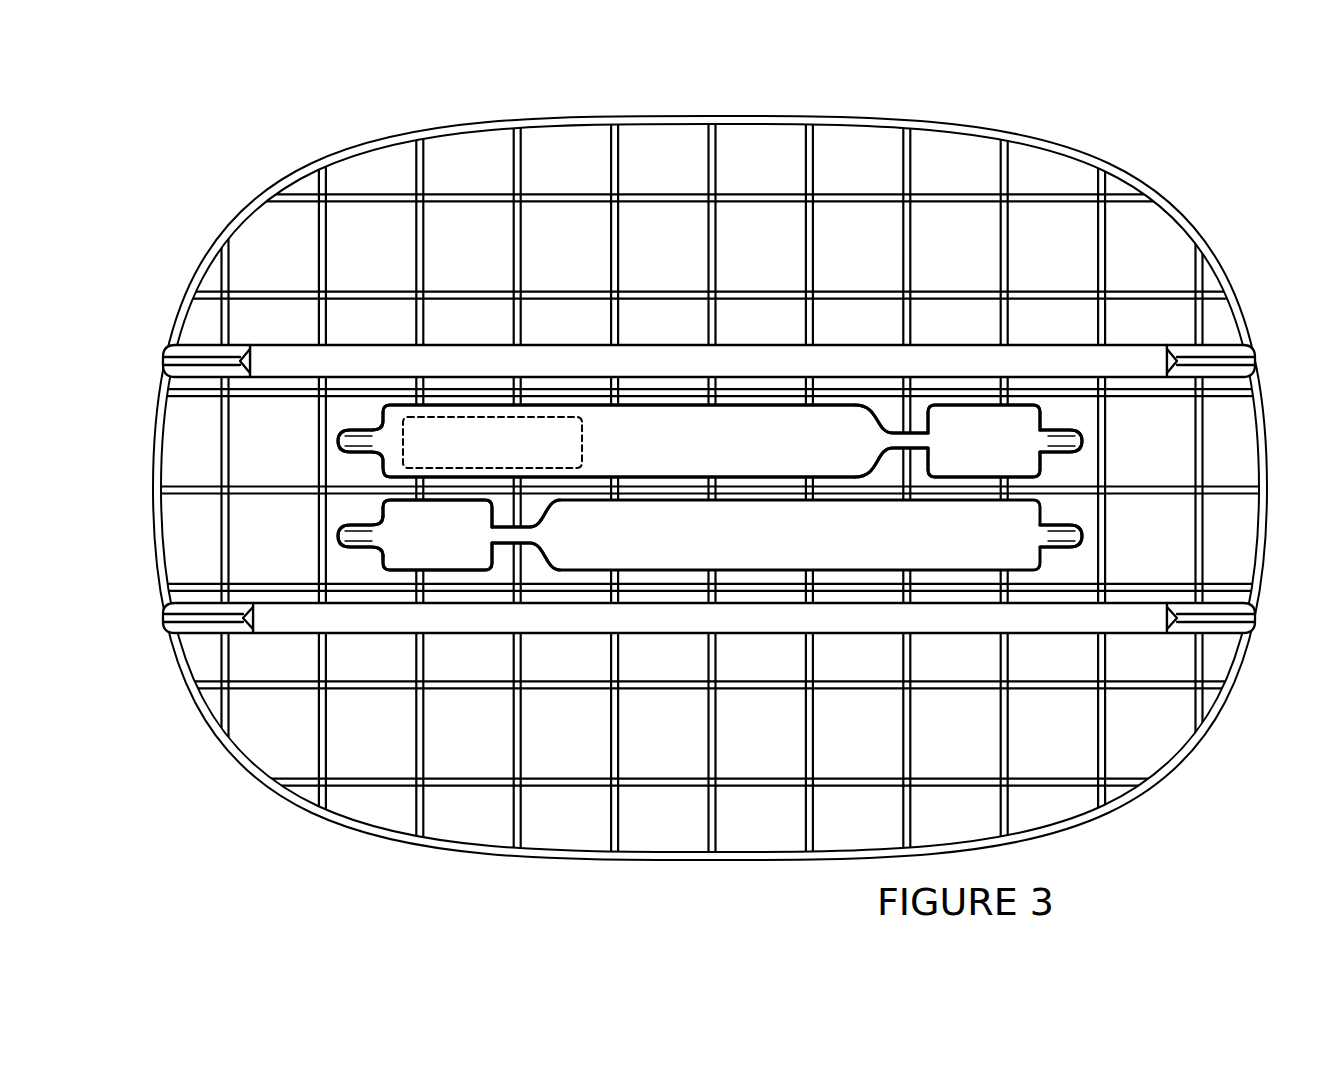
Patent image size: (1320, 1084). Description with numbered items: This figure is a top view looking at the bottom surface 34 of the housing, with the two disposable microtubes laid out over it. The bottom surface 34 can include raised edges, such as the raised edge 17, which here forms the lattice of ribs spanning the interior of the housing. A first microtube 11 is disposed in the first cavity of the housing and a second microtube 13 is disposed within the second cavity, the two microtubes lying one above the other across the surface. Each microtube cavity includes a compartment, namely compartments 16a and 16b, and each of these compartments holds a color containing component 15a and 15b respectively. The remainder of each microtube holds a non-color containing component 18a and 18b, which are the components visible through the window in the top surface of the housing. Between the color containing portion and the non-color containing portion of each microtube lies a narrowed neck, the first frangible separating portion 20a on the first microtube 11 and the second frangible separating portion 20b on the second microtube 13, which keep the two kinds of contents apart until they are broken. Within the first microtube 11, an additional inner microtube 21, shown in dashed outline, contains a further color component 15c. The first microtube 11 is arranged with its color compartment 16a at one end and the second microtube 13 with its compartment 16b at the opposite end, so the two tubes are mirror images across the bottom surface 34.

The first microtube 11 is at (374, 418).
The second microtube 13 is at (1050, 554).
The color containing component 15a is at (981, 430).
The color containing component 15b is at (445, 548).
The color component 15c is at (410, 427).
The compartment 16a is at (1022, 425).
The compartment 16b is at (408, 575).
The raised edge 17 is at (524, 157).
The non-color containing component 18a is at (647, 428).
The non-color containing component 18b is at (772, 545).
The first frangible separating portion 20a is at (917, 437).
The second frangible separating portion 20b is at (508, 548).
The additional inner microtube 21 is at (465, 417).
The bottom surface 34 is at (433, 142).